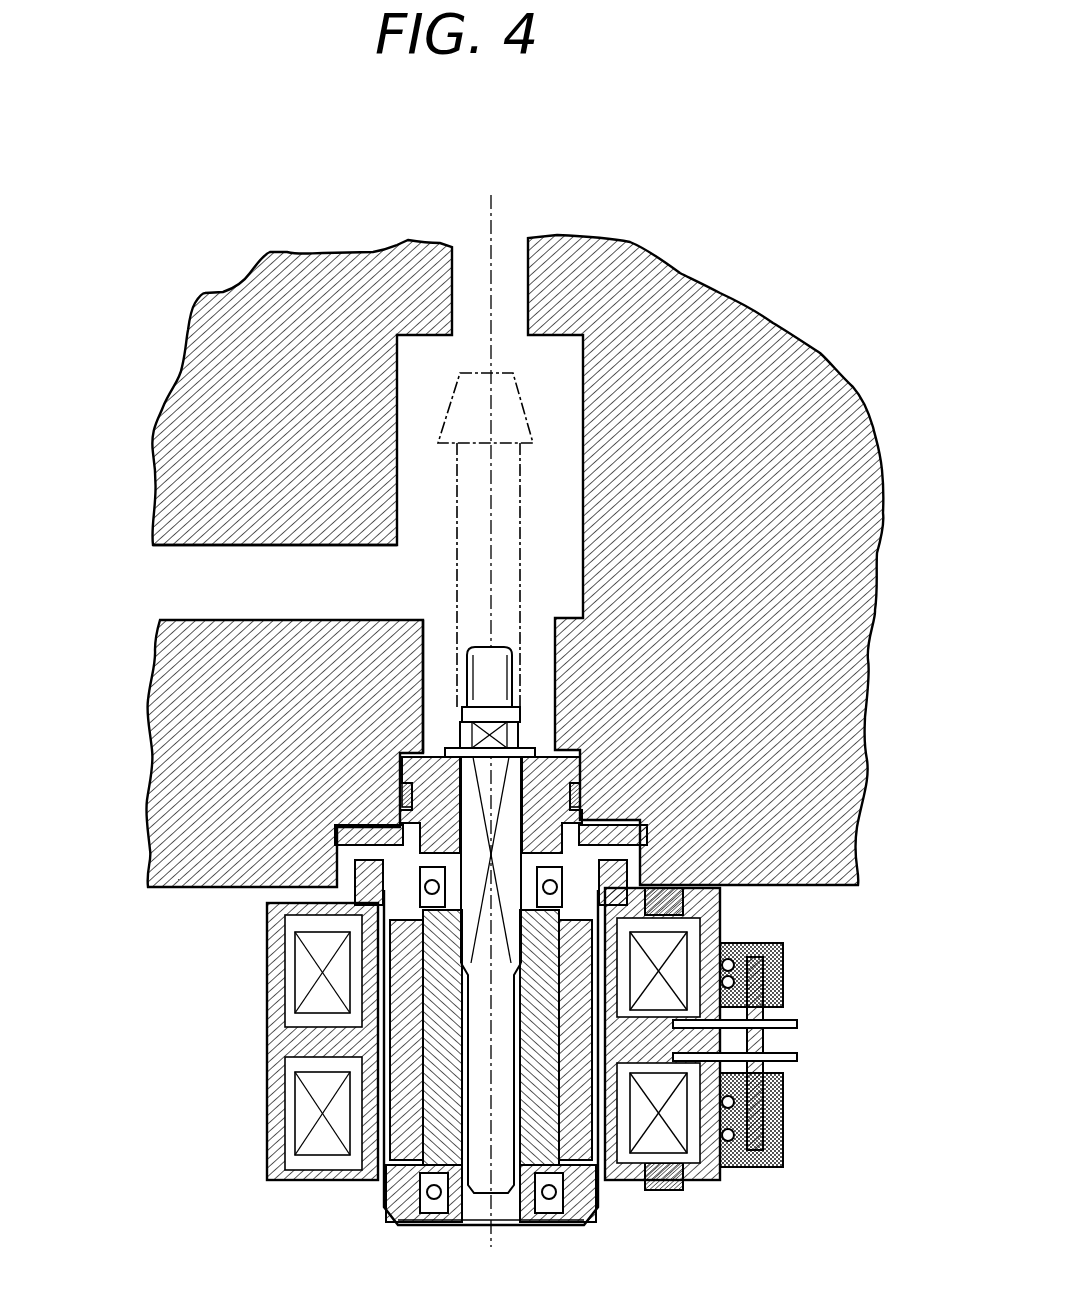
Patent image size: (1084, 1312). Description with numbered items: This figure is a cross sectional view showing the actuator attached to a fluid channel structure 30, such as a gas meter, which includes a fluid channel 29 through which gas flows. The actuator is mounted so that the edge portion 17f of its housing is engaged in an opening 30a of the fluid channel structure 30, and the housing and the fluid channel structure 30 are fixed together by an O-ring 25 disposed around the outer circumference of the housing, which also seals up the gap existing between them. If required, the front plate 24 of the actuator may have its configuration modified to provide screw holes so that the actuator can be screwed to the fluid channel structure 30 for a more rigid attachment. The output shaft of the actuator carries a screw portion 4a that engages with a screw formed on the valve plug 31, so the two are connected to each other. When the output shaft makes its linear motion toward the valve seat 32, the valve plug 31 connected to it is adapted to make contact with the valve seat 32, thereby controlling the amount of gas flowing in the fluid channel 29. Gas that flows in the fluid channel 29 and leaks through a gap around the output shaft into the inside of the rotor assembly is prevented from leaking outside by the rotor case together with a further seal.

The valve seat 32 is at (452, 333).
The valve plug 31 is at (486, 400).
The fluid channel 29 is at (212, 600).
The opening 30a is at (417, 753).
The edge portion 17f is at (410, 773).
The O-ring 25 is at (397, 817).
The fluid channel structure 30 is at (198, 780).
The front plate 24 is at (270, 887).
The screw portion 4a is at (497, 680).